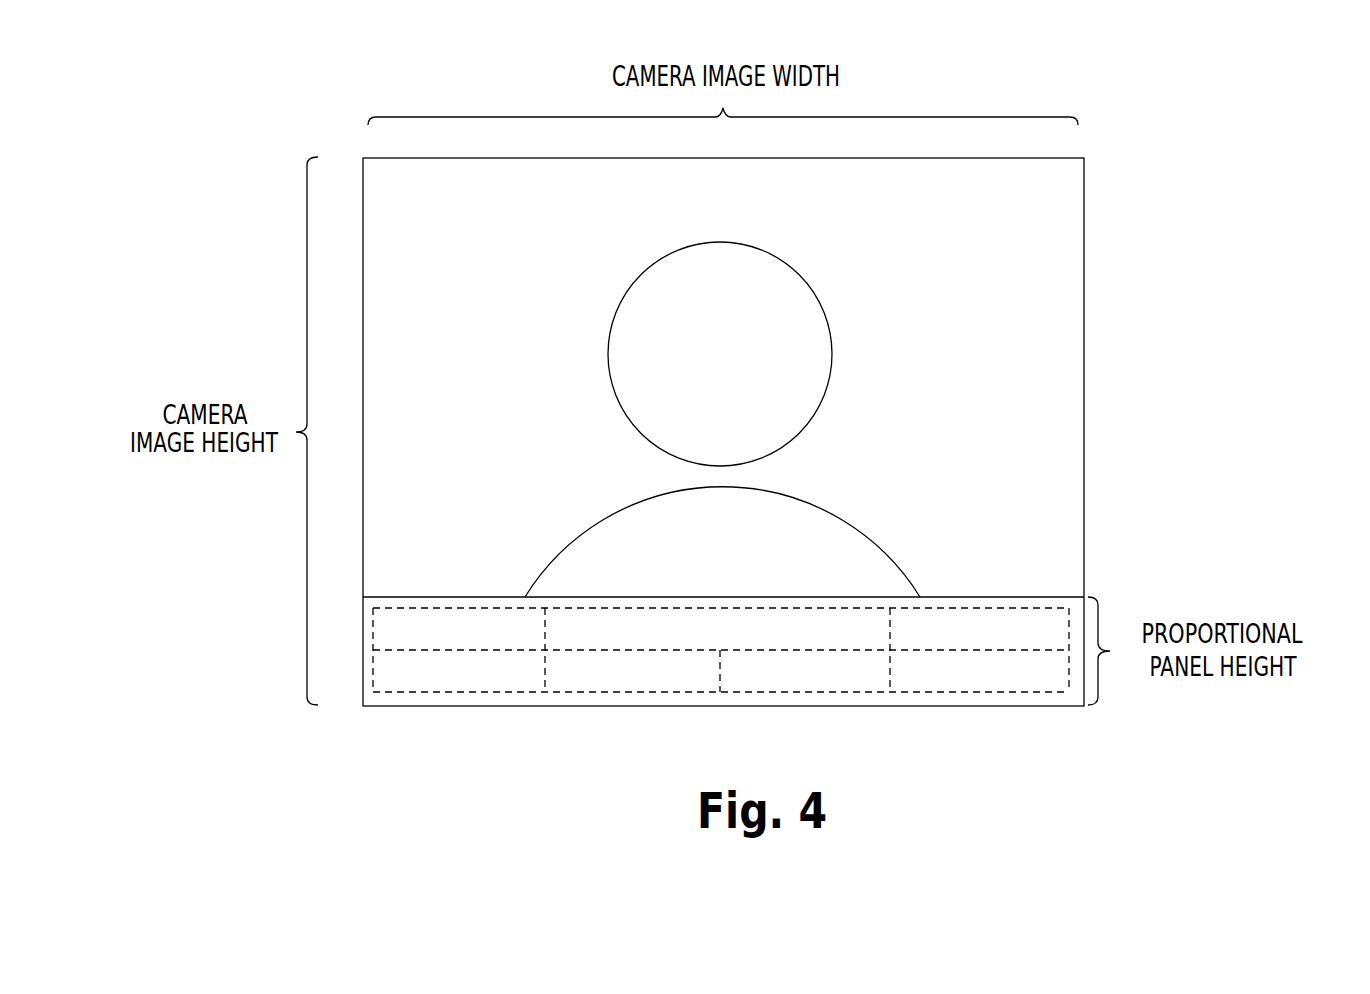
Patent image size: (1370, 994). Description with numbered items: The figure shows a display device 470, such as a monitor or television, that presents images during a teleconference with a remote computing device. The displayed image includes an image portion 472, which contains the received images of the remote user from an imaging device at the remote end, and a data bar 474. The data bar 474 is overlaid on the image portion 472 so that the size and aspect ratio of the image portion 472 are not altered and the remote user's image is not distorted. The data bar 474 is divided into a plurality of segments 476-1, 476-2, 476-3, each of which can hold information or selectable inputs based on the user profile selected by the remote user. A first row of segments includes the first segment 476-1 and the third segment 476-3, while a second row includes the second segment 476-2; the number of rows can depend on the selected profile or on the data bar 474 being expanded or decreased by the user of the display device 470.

The display device 470 is at (729, 399).
The image portion 472 is at (1085, 300).
The data bar 474 is at (679, 641).
The first segment 476-1 is at (392, 626).
The second segment 476-2 is at (392, 689).
The third segment 476-3 is at (852, 630).